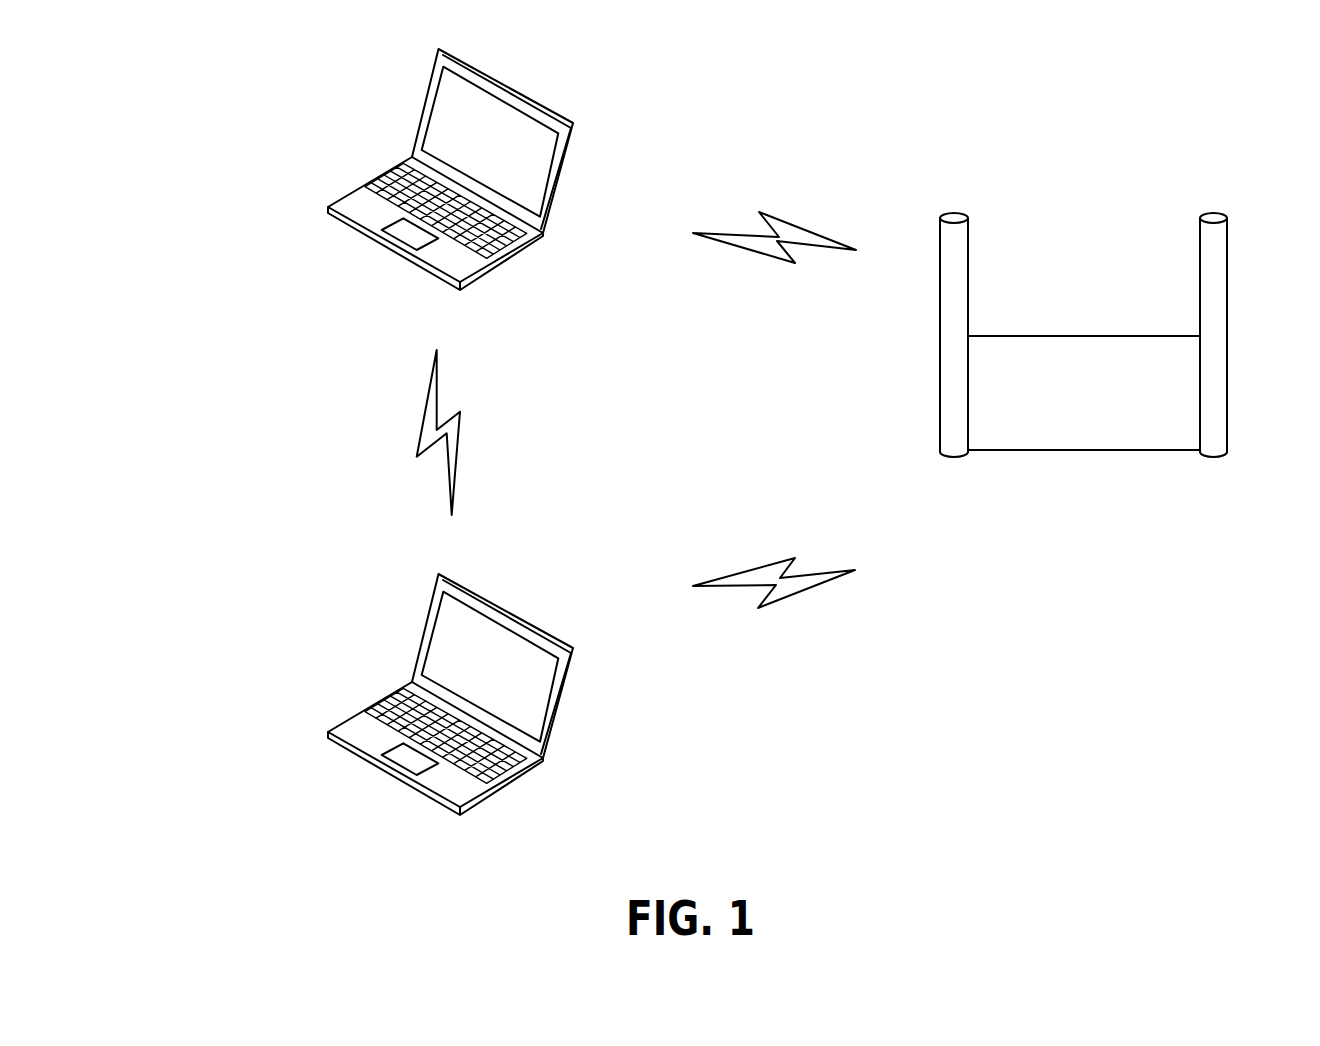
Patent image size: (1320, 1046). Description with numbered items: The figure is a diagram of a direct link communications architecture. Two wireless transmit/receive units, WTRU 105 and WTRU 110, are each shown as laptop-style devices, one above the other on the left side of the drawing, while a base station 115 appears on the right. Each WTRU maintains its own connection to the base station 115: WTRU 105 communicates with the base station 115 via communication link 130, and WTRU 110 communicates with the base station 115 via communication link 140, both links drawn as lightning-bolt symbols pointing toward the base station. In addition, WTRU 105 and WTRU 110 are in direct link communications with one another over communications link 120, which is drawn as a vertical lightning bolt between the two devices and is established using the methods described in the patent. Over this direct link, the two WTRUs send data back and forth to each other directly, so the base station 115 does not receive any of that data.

The WTRU 105 is at (340, 200).
The WTRU 110 is at (340, 725).
The base station 115 is at (1037, 450).
The communications link 120 is at (426, 407).
The communication link 130 is at (786, 221).
The communication link 140 is at (776, 560).